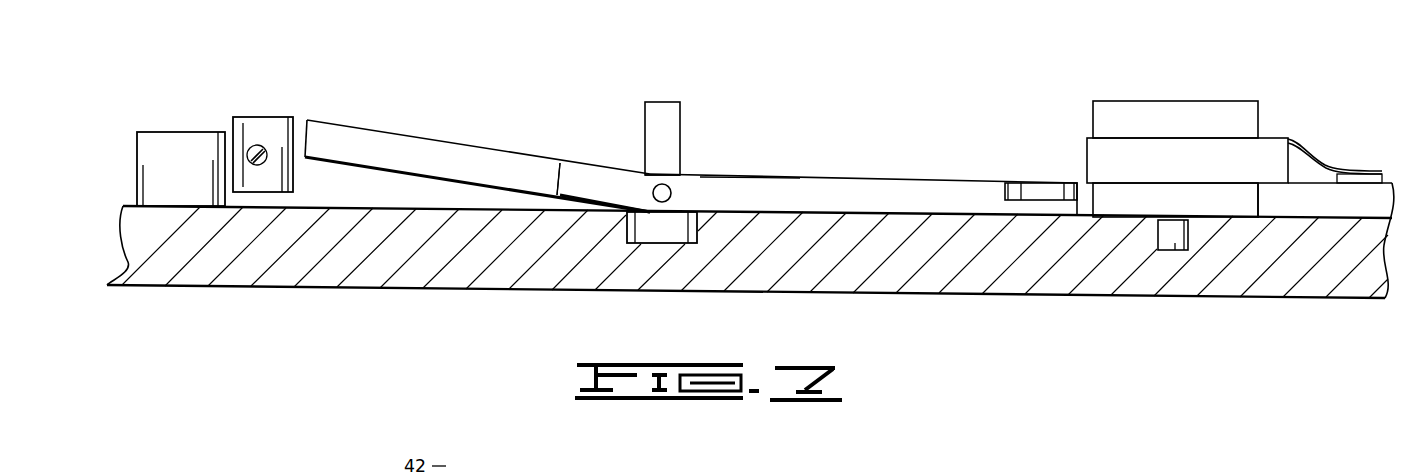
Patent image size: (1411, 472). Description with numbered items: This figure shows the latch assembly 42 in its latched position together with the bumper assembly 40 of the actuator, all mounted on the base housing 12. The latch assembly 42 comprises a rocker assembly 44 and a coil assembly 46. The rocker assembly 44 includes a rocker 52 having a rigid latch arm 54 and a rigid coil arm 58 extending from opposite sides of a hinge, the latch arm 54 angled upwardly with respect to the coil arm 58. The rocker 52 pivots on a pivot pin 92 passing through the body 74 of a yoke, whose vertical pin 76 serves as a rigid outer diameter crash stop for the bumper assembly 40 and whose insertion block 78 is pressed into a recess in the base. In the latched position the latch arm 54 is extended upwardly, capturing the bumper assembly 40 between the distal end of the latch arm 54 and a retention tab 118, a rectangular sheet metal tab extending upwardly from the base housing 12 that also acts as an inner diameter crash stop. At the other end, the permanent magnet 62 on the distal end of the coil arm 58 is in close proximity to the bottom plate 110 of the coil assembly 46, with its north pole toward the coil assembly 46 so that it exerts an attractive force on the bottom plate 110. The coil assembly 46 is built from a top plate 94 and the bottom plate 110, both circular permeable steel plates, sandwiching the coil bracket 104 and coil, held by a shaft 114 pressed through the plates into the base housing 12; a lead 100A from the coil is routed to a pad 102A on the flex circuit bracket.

The base housing 12 is at (338, 283).
The bumper assembly 40 is at (253, 122).
The latch assembly 42 is at (580, 60).
The rocker assembly 44 is at (744, 102).
The coil assembly 46 is at (1196, 88).
The rocker 52 is at (620, 135).
The latch arm 54 is at (373, 132).
The coil arm 58 is at (867, 195).
The permanent magnet 62 is at (1047, 193).
The body 74 is at (593, 211).
The pin 76 is at (657, 110).
The insertion block 78 is at (652, 237).
The pivot pin 92 is at (672, 196).
The top plate 94 is at (1130, 107).
The lead 100A is at (1298, 140).
The pad 102A is at (1313, 153).
The coil bracket 104 is at (1177, 163).
The bottom plate 110 is at (1128, 205).
The shaft 114 is at (1190, 237).
The retention tab 118 is at (182, 140).